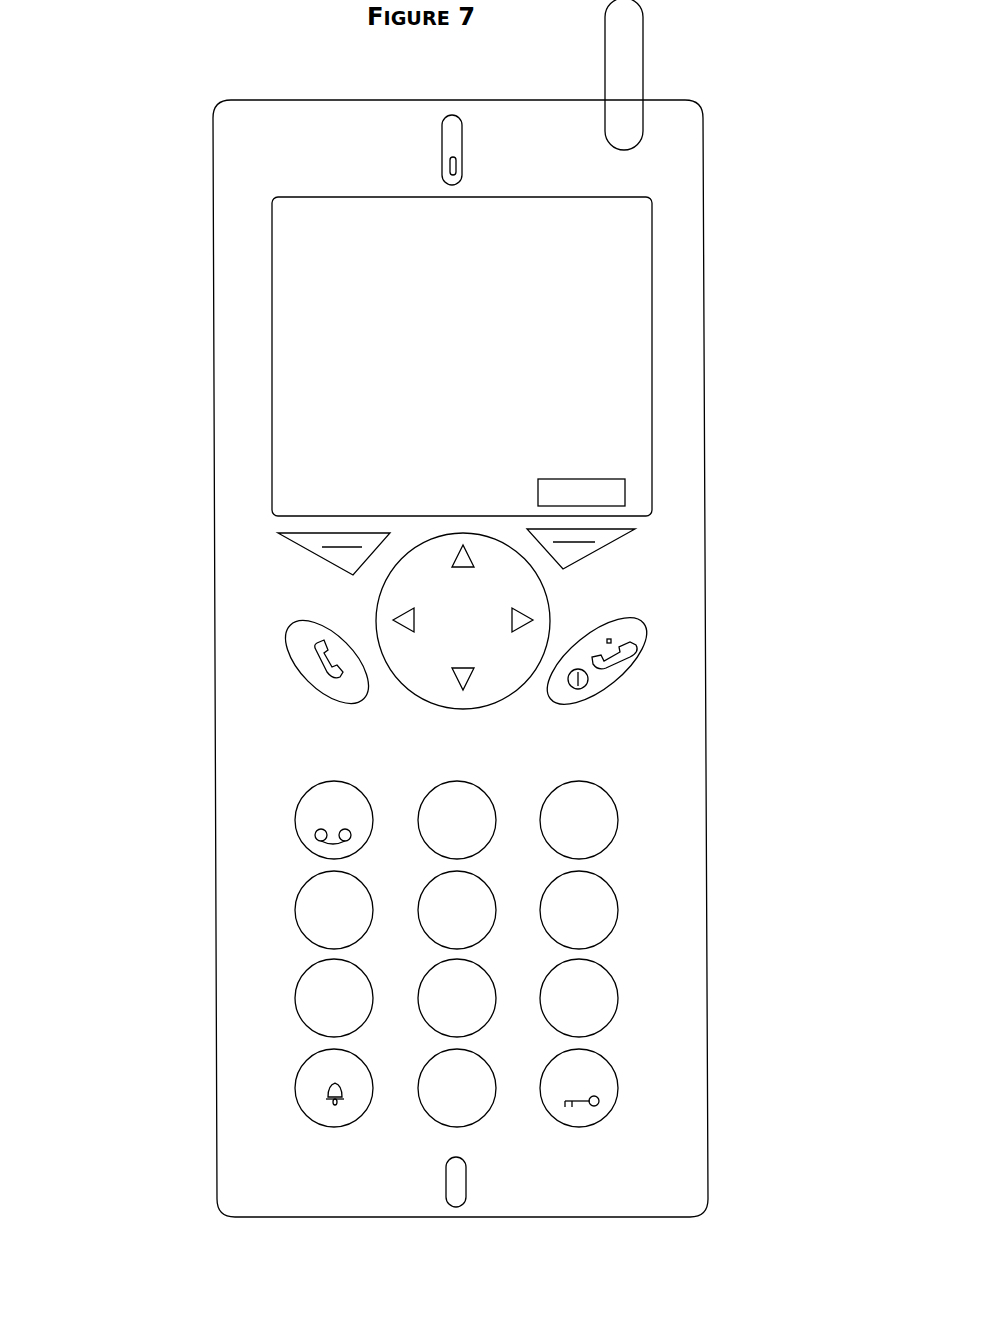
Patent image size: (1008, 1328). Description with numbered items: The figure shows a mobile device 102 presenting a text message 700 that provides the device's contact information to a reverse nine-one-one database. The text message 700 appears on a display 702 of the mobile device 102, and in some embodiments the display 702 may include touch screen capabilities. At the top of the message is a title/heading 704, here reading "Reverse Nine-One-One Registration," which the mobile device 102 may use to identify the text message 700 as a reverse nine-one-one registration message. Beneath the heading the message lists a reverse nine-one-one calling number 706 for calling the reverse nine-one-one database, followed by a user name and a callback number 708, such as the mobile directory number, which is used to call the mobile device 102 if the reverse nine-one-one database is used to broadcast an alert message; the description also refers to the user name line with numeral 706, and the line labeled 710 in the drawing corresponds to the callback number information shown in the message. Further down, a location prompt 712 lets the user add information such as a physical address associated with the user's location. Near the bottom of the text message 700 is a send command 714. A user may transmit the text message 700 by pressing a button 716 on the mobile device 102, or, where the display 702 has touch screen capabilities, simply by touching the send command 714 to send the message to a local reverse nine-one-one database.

The mobile device 102 is at (176, 147).
The text message 700 is at (601, 216).
The display 702 is at (265, 321).
The title/heading 704 is at (580, 253).
The reverse 911 calling number 706 is at (645, 294).
The callback number 708 is at (552, 338).
The call back number field 710 is at (604, 361).
The location prompt 712 is at (589, 400).
The send command 714 is at (637, 487).
The button 716 is at (640, 537).